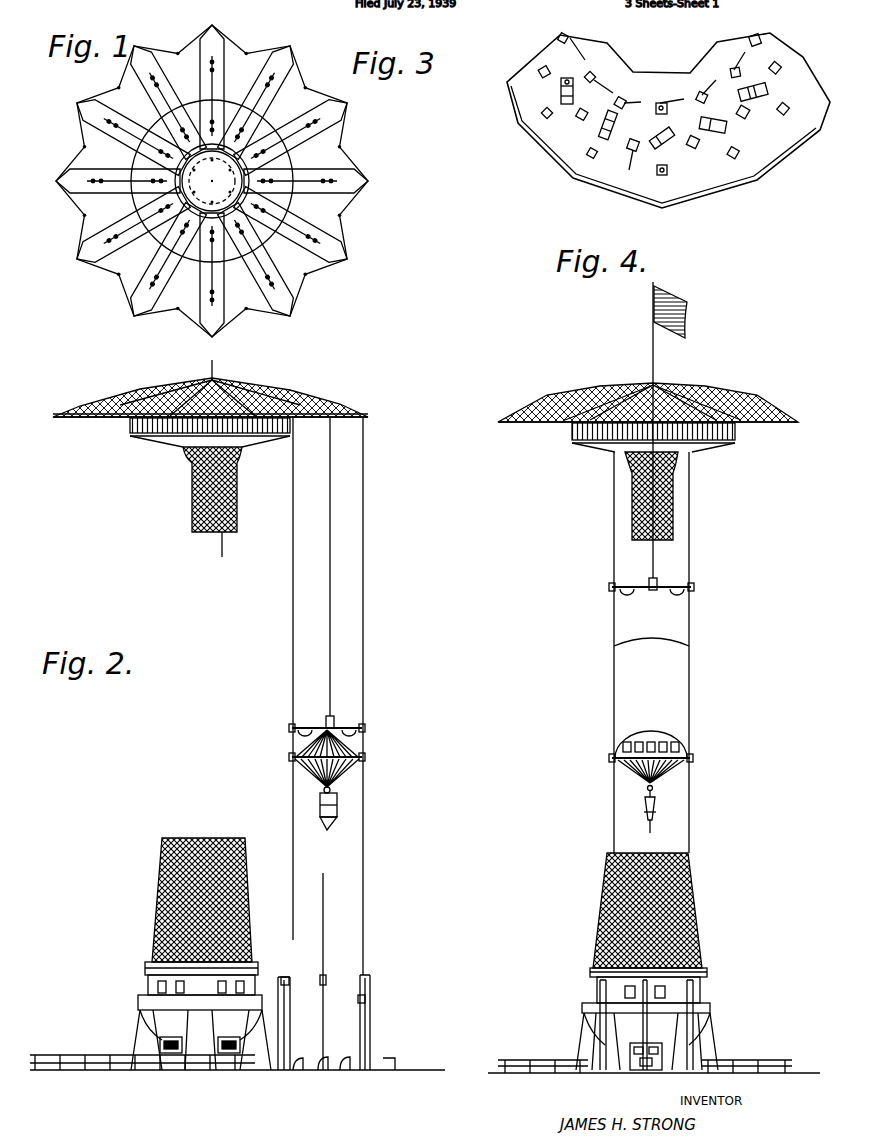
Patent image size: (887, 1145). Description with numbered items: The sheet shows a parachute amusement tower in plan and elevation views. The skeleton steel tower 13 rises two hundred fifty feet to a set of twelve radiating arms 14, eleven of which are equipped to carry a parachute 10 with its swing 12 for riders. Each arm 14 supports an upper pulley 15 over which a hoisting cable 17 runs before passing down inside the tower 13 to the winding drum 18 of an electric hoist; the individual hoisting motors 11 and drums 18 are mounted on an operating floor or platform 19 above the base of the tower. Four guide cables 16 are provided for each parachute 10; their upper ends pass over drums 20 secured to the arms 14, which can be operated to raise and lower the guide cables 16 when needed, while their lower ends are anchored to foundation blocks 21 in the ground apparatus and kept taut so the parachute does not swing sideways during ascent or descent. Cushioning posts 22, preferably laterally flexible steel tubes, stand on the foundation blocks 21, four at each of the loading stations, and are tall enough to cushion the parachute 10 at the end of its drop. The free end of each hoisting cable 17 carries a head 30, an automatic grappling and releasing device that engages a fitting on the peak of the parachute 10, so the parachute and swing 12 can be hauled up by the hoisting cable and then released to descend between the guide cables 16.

In FIG. 2, the parachute 10 is at (352, 773).
In FIG. 4, the parachute 10 is at (632, 740).
In FIG. 2, the hoisting motor 11 is at (230, 1012).
In FIG. 2, the swing 12 is at (337, 810).
In FIG. 4, the swing 12 is at (643, 815).
In FIG. 2, the skeleton steel tower 13 is at (190, 518).
In FIG. 4, the skeleton steel tower 13 is at (634, 527).
In FIG. 1, the arm 14 is at (358, 193).
In FIG. 2, the arm 14 is at (328, 417).
In FIG. 4, the arm 14 is at (518, 422).
In FIG. 1, the upper pulley 15 is at (253, 178).
In FIG. 2, the upper pulley 15 is at (233, 414).
In FIG. 2, the guide cable 16 is at (363, 583).
In FIG. 4, the guide cable 16 is at (614, 657).
In FIG. 1, the hoisting cable 17 is at (212, 266).
In FIG. 2, the hoisting cable 17 is at (222, 556).
In FIG. 4, the hoisting cable 17 is at (648, 563).
In FIG. 2, the winding drum 18 is at (222, 990).
In FIG. 2, the operating floor or platform 19 is at (164, 1002).
In FIG. 1, the drum 20 is at (288, 258).
In FIG. 2, the drum 20 is at (297, 414).
In FIG. 4, the drum 20 is at (620, 395).
In FIG. 3, the foundation block 21 is at (543, 76).
In FIG. 3, the cushioning post 22 is at (588, 153).
In FIG. 2, the cushioning post 22 is at (357, 1058).
In FIG. 2, the head 30 is at (334, 720).
In FIG. 4, the head 30 is at (657, 582).